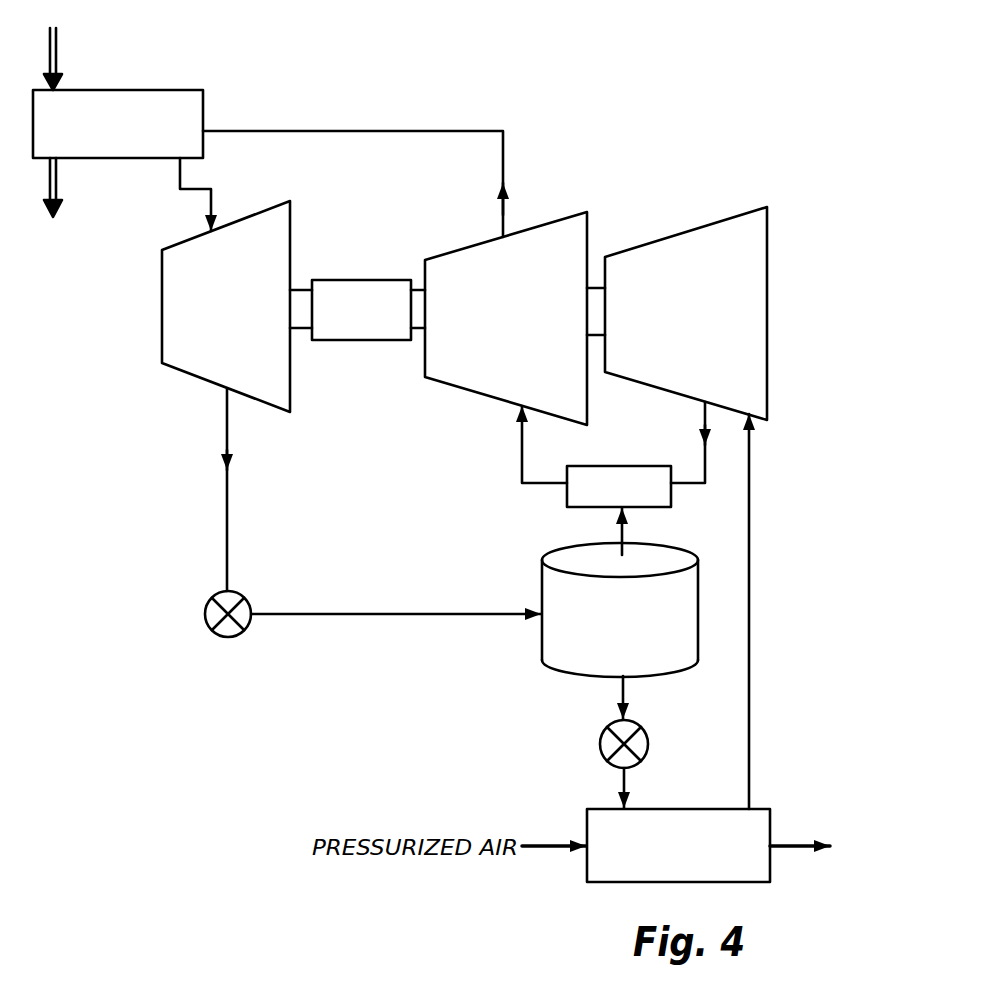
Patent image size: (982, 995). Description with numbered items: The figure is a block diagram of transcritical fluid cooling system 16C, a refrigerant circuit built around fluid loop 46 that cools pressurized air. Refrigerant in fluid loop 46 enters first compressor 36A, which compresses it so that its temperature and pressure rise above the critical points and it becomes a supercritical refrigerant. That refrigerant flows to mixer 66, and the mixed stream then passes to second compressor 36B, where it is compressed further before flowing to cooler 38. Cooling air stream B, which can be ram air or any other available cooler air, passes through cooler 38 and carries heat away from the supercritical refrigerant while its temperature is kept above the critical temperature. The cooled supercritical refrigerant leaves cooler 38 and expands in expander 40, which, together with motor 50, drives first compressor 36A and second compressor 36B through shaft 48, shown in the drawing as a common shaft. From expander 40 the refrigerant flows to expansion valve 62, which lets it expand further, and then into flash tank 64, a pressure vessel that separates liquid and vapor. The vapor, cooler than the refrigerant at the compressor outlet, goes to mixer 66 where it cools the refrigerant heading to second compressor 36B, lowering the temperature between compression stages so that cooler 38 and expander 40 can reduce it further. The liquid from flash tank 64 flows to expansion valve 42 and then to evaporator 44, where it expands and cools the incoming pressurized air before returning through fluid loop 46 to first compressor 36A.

The transcritical fluid cooling system 16C is at (706, 120).
The cooling air stream B is at (56, 50).
The cooler 38 is at (133, 90).
The expander 40 is at (161, 340).
The shaft 48 is at (301, 289).
The motor 50 is at (349, 282).
The second compressor 36B is at (538, 228).
The first compressor 36A is at (668, 240).
The mixer 66 is at (600, 465).
The flash tank 64 is at (542, 587).
The expansion valve 62 is at (238, 592).
The expansion valve 42 is at (599, 744).
The fluid loop 46 is at (753, 522).
The evaporator 44 is at (772, 818).